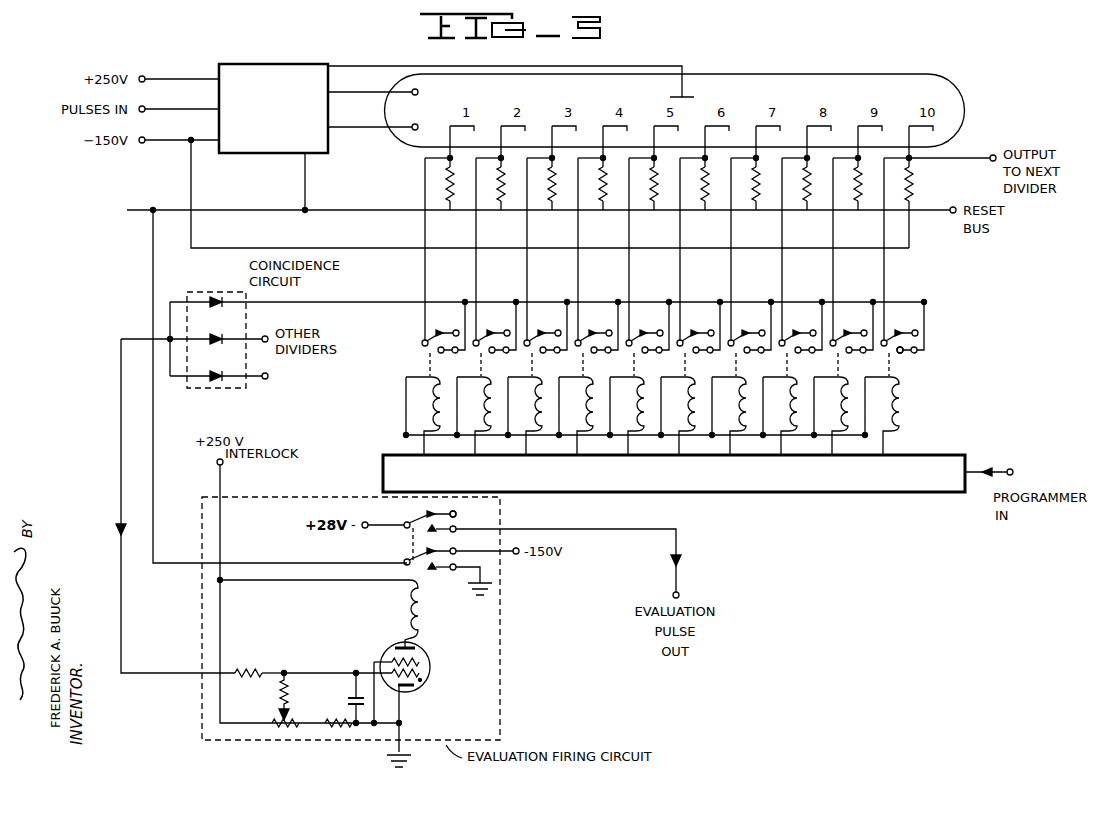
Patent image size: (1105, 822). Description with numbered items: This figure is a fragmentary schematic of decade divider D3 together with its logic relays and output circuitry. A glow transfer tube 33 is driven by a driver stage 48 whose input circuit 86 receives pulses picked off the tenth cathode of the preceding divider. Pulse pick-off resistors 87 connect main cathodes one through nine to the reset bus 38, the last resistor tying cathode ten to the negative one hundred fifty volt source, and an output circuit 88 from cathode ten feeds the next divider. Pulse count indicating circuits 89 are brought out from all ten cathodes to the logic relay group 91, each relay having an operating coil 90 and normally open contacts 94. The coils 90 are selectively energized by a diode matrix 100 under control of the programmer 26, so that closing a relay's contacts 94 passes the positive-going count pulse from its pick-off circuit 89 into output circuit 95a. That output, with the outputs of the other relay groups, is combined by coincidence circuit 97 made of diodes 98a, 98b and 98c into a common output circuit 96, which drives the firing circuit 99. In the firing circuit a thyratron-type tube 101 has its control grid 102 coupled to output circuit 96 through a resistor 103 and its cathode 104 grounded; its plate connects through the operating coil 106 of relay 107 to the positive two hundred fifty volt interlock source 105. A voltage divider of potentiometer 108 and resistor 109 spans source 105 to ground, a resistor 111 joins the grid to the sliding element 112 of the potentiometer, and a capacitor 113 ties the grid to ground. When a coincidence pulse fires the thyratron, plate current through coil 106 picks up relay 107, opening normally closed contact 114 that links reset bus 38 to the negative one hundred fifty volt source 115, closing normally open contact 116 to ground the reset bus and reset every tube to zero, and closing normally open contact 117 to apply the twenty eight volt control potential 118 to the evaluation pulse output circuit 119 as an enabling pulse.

The driver stage 48 is at (280, 64).
The input circuit 86 is at (145, 108).
The glow transfer tube 33 is at (960, 86).
The output circuit 88 is at (957, 156).
The pulse pick-off resistors 87 is at (443, 186).
The pulse count indicating circuits 89 is at (425, 228).
The reset bus 38 is at (134, 210).
The coincidence circuit 97 is at (181, 390).
The diode 98a is at (223, 306).
The diode 98b is at (223, 343).
The diode 98c is at (223, 380).
The output circuit 95a is at (364, 308).
The logic relay group 91 is at (934, 367).
The normally open contacts 94 is at (905, 355).
The operating coil 90 is at (900, 400).
The diode matrix 100 is at (913, 457).
The programmer 26 is at (1010, 468).
The common output circuit 96 is at (114, 460).
The positive 250 volt source of potential 105 is at (216, 466).
The firing circuit 99 is at (500, 703).
The source of control potential 118 is at (366, 521).
The normally open contact 117 is at (460, 519).
The relay 107 is at (364, 556).
The normally closed contact 114 is at (411, 556).
The negative 150 volt source of potential 115 is at (518, 561).
The normally open contact 116 is at (425, 573).
The evaluation pulse output circuit 119 is at (680, 580).
The operating coil 106 is at (408, 600).
The thyratron-type tube 101 is at (391, 647).
The control grid 102 is at (425, 674).
The cathode 104 is at (412, 688).
The resistor 103 is at (240, 668).
The resistor 111 is at (281, 685).
The sliding element 112 is at (290, 717).
The capacitor 113 is at (352, 696).
The potentiometer 108 is at (273, 727).
The resistor 109 is at (347, 728).